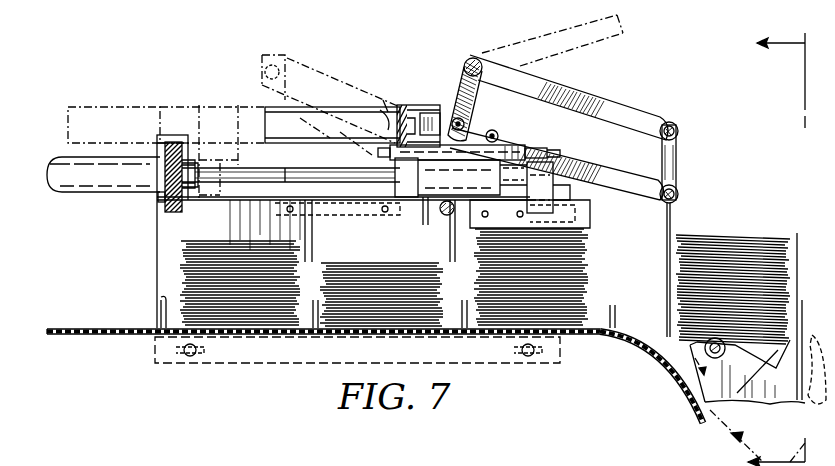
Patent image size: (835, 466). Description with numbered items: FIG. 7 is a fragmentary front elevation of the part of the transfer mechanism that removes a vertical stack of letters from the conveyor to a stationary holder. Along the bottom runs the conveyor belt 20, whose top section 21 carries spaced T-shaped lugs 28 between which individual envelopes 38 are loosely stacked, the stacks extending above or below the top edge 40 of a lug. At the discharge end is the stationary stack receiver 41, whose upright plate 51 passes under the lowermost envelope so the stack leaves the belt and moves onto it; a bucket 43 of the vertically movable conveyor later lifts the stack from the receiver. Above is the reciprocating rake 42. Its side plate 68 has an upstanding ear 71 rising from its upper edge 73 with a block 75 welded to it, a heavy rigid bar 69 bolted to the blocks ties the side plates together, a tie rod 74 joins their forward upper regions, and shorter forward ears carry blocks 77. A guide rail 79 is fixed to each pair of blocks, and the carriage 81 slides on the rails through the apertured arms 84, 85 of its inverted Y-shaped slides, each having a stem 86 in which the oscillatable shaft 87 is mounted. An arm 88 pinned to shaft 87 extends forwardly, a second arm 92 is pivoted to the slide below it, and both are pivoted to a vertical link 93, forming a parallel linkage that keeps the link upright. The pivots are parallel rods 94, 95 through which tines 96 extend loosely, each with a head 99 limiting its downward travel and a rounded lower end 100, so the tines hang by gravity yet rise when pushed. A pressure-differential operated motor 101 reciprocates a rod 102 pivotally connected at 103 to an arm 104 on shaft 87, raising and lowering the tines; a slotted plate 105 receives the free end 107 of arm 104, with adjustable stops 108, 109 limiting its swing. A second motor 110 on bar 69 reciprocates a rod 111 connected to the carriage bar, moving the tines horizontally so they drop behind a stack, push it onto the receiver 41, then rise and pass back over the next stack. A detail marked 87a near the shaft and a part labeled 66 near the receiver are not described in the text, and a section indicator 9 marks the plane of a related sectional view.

The conveyor belt 20 is at (110, 336).
The top section 21 is at (66, 329).
The lugs 28 is at (158, 318).
The envelopes 38 is at (182, 256).
The top edge 40 is at (163, 297).
The stack receiver 41 is at (712, 375).
The rake 42 is at (237, 165).
The bucket 43 is at (745, 440).
The plate 51 is at (724, 384).
The roller 66 is at (705, 348).
The side plate 68 is at (155, 262).
The bar 69 is at (166, 143).
The ear 71 is at (175, 135).
The upper edge 73 is at (243, 183).
The tie rod 74 is at (448, 216).
The block 75 is at (158, 205).
The block 77 is at (553, 208).
The guide rail 79 is at (270, 183).
The carriage 81 is at (414, 104).
The arm 84 is at (405, 197).
The arm 85 is at (535, 172).
The stem 86 is at (502, 78).
The oscillatable shaft 87 is at (278, 60).
The link end 87a is at (384, 98).
The arm 88 is at (596, 96).
The arm 92 is at (600, 168).
The vertical link 93 is at (680, 146).
The rod 94 is at (677, 128).
The rod 95 is at (678, 194).
The tine 96 is at (676, 210).
The head 99 is at (678, 122).
The rounded lower end 100 is at (655, 348).
The pressure-differential operated motor 101 is at (80, 106).
The rod 102 is at (405, 104).
The pivotal connection 103 is at (440, 110).
The arm 104 is at (460, 116).
The plate 105 is at (497, 132).
The free end 107 is at (424, 212).
The adjustable stop 108 is at (537, 148).
The adjustable stop 109 is at (378, 108).
The pressure-differential operated motor 110 is at (70, 158).
The rod 111 is at (286, 183).
The section line 9- 9 is at (776, 245).